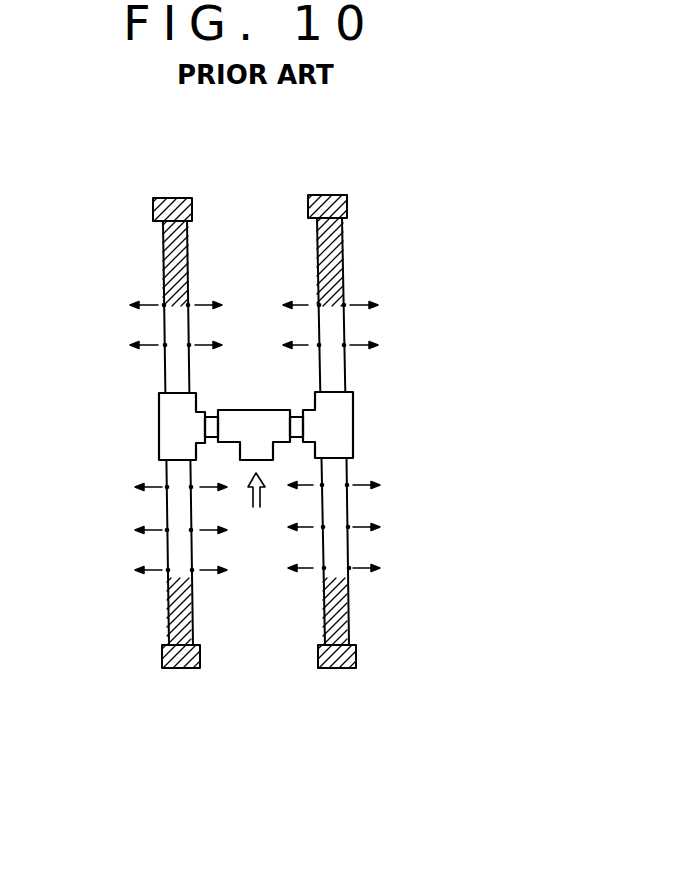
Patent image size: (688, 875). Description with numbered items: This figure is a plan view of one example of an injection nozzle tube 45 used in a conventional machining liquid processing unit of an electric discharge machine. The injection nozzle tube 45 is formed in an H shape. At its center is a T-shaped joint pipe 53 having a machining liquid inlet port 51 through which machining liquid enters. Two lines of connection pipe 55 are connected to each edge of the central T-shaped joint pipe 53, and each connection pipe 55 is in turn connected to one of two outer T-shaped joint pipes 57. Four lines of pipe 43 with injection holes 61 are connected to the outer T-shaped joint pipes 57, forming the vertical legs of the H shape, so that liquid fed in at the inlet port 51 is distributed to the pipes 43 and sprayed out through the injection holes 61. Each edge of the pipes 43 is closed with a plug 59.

The injection nozzle tube 45 is at (390, 253).
The pipe 43 is at (170, 300).
The machining liquid inlet port 51 is at (260, 461).
The T-shaped joint pipe 53 is at (256, 420).
The connection pipe 55 is at (210, 426).
The T-shaped joint pipe 57 is at (170, 412).
The plug 59 is at (183, 204).
The injection holes 61 is at (170, 331).